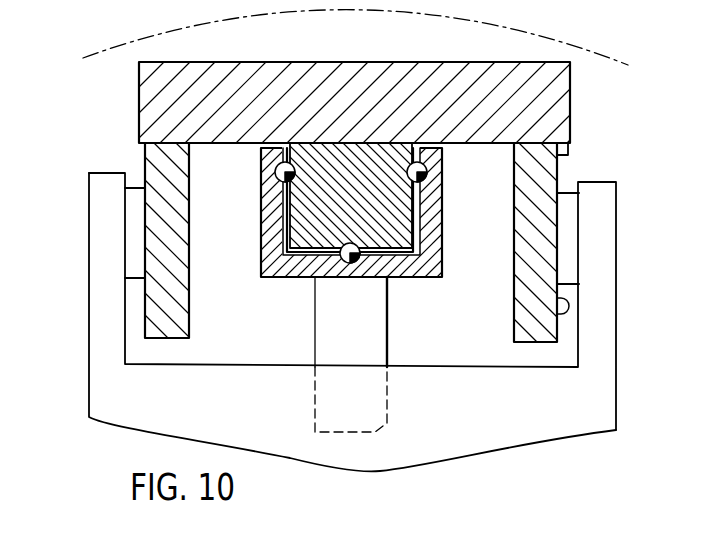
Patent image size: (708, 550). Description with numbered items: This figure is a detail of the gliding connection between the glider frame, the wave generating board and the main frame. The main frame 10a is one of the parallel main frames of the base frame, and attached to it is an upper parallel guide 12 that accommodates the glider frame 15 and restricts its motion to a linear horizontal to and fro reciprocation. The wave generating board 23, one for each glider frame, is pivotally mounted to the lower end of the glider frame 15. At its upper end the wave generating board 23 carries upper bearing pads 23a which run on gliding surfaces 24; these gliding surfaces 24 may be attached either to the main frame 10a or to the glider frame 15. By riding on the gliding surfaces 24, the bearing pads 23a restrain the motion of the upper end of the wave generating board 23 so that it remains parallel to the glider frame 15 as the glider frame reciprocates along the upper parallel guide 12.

The main frame 10a is at (188, 72).
The upper parallel guide 12 is at (330, 203).
The glider frame 15 is at (387, 310).
The wave generating board 23 is at (105, 173).
The upper bearing pad 23a is at (137, 246).
The gliding surface 24 is at (135, 310).